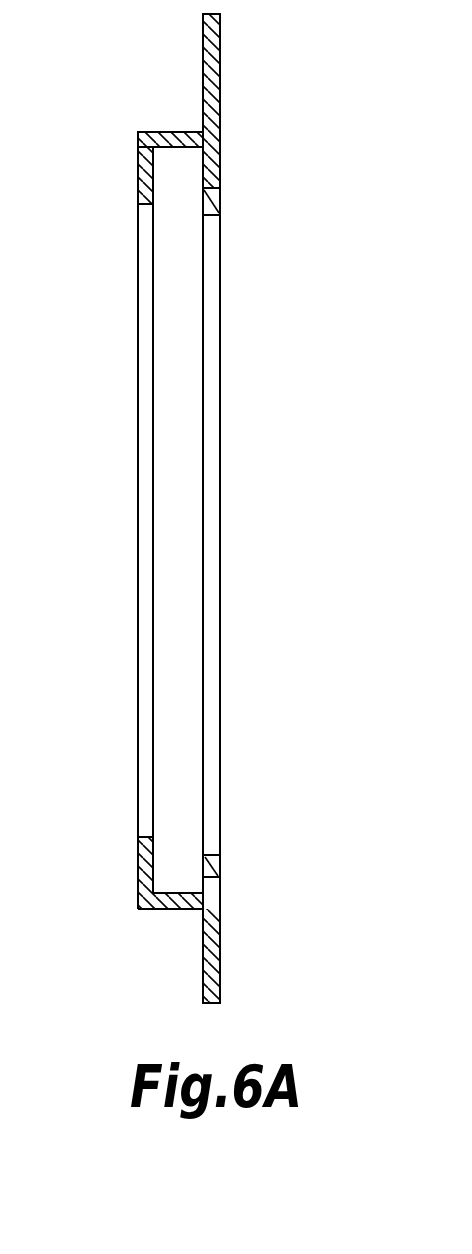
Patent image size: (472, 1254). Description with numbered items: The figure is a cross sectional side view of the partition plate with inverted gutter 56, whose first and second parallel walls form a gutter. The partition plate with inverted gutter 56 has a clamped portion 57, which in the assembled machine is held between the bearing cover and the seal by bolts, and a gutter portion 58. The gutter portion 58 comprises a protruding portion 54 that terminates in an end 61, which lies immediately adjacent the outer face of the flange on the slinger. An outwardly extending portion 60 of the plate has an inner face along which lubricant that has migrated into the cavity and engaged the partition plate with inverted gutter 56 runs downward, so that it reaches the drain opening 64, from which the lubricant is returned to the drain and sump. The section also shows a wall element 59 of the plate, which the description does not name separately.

The protruding portion 54 is at (177, 508).
The partition plate with inverted gutter 56 is at (236, 407).
The clamped portion 57 is at (219, 59).
The gutter portion 58 is at (183, 148).
The side wall 59 is at (138, 166).
The outwardly extending portion 60 is at (170, 131).
The end 61 is at (218, 206).
The drain opening 64 is at (217, 883).